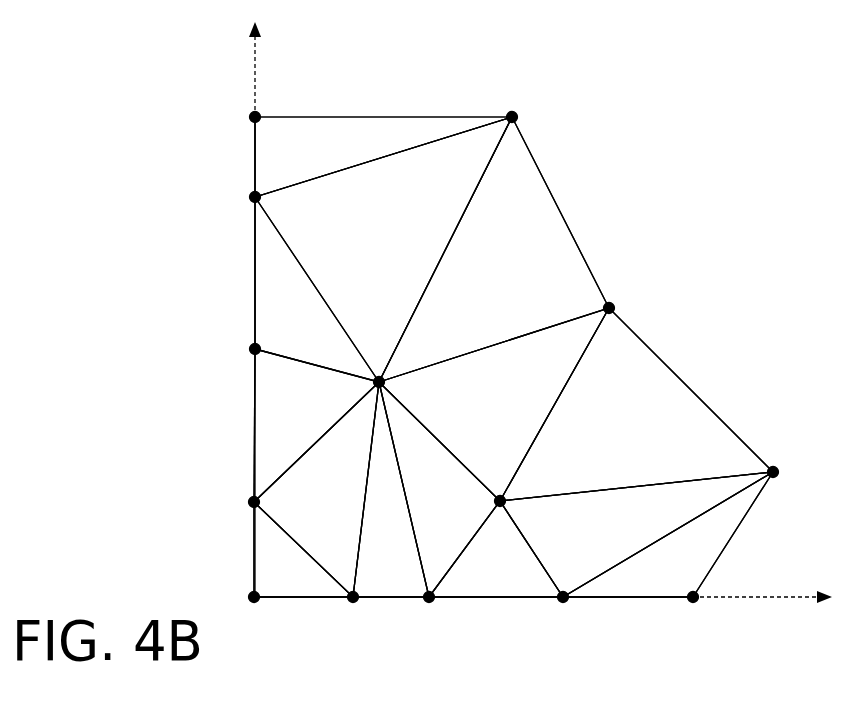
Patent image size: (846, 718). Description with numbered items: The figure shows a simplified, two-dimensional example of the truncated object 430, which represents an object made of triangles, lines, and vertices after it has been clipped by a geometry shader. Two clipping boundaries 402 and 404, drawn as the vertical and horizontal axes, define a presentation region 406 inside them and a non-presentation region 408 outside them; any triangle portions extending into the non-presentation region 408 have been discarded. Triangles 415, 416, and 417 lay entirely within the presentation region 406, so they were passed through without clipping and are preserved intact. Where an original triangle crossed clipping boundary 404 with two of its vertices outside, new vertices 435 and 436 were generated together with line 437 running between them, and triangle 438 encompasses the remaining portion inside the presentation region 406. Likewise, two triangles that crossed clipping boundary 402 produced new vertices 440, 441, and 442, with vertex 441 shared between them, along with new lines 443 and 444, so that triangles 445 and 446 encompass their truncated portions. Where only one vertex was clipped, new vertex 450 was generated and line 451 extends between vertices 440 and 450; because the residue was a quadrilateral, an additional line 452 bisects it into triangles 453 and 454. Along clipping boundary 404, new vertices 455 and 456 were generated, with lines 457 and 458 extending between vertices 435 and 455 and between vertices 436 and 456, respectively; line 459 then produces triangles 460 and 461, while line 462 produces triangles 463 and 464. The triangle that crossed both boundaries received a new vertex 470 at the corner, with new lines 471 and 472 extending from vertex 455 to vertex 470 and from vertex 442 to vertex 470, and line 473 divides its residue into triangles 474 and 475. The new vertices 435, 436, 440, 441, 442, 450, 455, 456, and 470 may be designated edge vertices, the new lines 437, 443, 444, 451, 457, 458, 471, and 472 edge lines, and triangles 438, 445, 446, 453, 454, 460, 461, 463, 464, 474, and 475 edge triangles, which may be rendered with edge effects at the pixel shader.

The clipping boundary 402 is at (255, 52).
The clipping boundary 404 is at (737, 597).
The presentation region 406 is at (547, 98).
The non-presentation region 408 is at (60, 113).
The truncated object 430 is at (632, 245).
The triangle 415 is at (523, 282).
The triangle 416 is at (515, 402).
The triangle 417 is at (642, 437).
The new vertex 435 is at (429, 597).
The new vertex 436 is at (563, 597).
The line 437 is at (452, 602).
The triangle 438 is at (517, 577).
The new vertex 440 is at (253, 200).
The new vertex 441 is at (255, 349).
The new vertex 442 is at (254, 502).
The new line 443 is at (253, 270).
The new line 444 is at (253, 420).
The triangle 445 is at (305, 316).
The triangle 446 is at (305, 420).
The new vertex 450 is at (255, 117).
The line 451 is at (253, 150).
The additional line 452 is at (315, 180).
The triangle 453 is at (323, 158).
The triangle 454 is at (392, 297).
The new vertex 455 is at (353, 597).
The new vertex 456 is at (693, 597).
The line 457 is at (365, 601).
The line 458 is at (590, 601).
The line 459 is at (393, 443).
The triangle 460 is at (410, 577).
The triangle 461 is at (463, 537).
The line 462 is at (690, 520).
The triangle 463 is at (601, 539).
The triangle 464 is at (678, 581).
The new vertex 470 is at (254, 597).
The new line 471 is at (272, 601).
The new line 472 is at (253, 555).
The line 473 is at (298, 542).
The triangle 474 is at (345, 488).
The triangle 475 is at (308, 582).